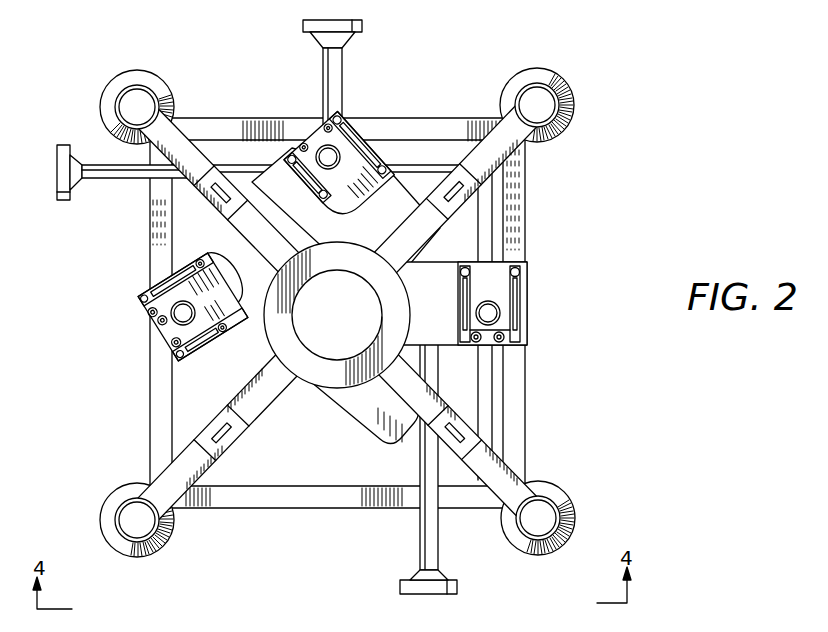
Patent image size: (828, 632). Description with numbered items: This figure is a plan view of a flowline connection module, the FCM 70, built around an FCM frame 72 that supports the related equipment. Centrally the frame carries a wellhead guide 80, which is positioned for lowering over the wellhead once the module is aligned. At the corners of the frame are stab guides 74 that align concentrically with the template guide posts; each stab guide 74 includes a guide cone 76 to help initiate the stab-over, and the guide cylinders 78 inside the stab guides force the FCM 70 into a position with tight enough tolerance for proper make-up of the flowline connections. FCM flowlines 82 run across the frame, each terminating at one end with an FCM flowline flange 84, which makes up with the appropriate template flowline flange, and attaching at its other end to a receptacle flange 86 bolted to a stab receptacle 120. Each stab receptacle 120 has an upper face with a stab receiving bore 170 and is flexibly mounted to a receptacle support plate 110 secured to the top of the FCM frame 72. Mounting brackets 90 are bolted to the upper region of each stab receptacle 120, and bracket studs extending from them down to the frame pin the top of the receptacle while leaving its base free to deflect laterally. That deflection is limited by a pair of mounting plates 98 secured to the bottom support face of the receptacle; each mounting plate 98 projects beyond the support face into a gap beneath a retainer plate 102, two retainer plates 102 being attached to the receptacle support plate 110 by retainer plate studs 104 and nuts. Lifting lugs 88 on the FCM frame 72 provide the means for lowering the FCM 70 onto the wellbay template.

The FCM 70 is at (622, 60).
The FCM frame 72 is at (290, 118).
The stab guide 74 is at (327, 285).
The guide cone 76 is at (140, 77).
The guide cylinder 78 is at (128, 92).
The wellhead guide 80 is at (334, 258).
The FCM flowline 82 is at (322, 68).
The FCM flowline flange 84 is at (303, 25).
The receptacle flange 86 is at (373, 200).
The lifting lug 88 is at (212, 430).
The mounting bracket 90 is at (513, 262).
The mounting plate 98 is at (152, 311).
The retainer plate 102 is at (155, 268).
The retainer plate stud 104 is at (150, 292).
The receptacle support plate 110 is at (292, 205).
The stab receptacle 120 is at (493, 288).
The stab receiving bore 170 is at (498, 313).